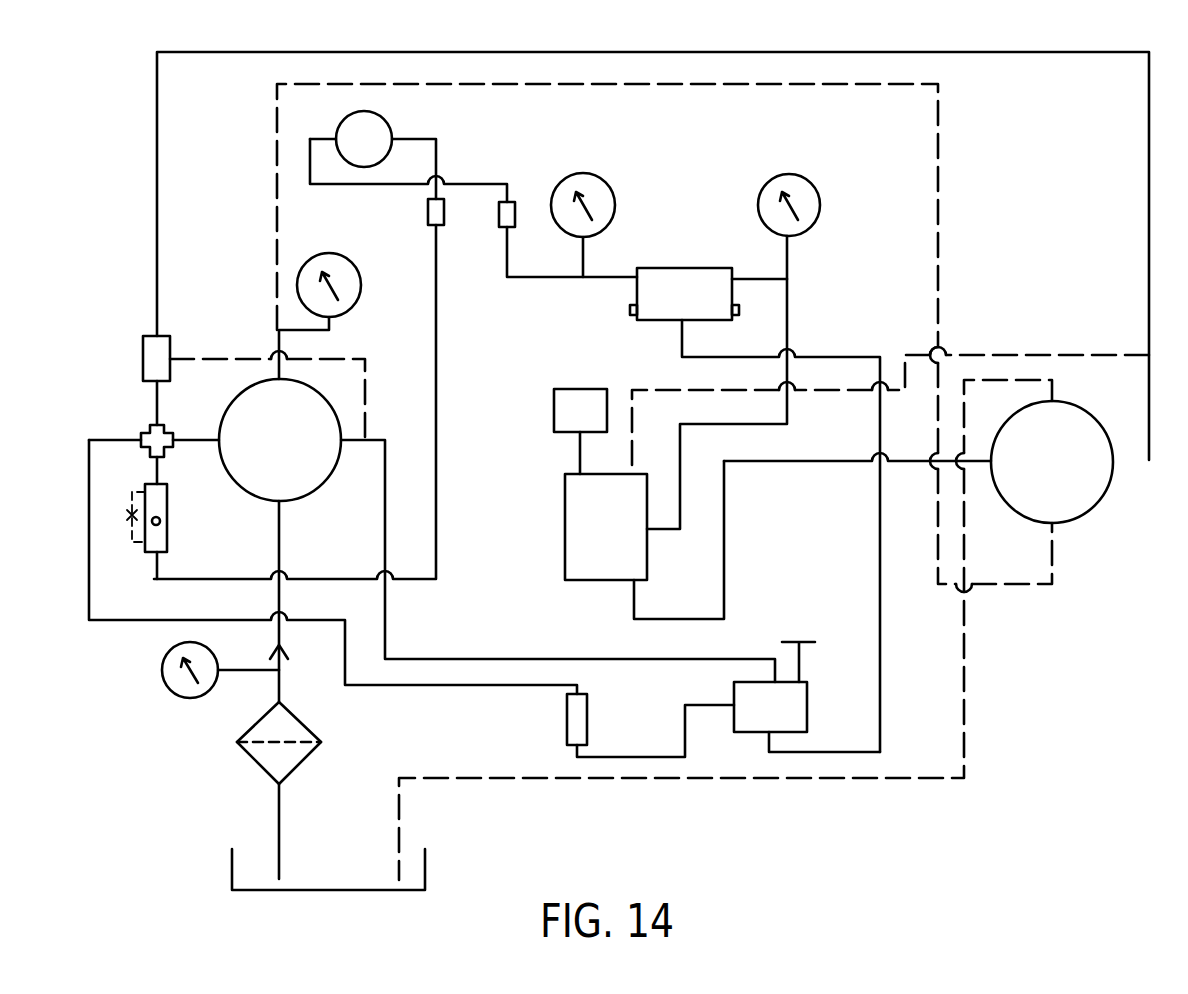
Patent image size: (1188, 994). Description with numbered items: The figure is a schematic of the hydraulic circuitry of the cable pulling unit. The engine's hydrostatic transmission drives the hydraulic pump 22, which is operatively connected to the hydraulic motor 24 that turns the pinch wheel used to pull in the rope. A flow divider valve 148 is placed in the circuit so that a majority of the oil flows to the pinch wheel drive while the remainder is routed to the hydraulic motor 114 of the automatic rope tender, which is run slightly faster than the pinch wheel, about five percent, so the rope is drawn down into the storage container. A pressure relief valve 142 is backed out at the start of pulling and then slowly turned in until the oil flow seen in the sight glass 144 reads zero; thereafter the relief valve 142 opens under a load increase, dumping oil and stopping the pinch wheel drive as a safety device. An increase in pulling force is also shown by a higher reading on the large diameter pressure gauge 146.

The hydraulic pump 22 is at (303, 476).
The hydraulic motor 24 is at (1091, 492).
The hydraulic motor 114 is at (379, 119).
The pressure relief valve 142 is at (800, 700).
The sight glass 144 is at (580, 708).
The pressure gauge 146 is at (813, 205).
The flow divider valve 148 is at (707, 273).